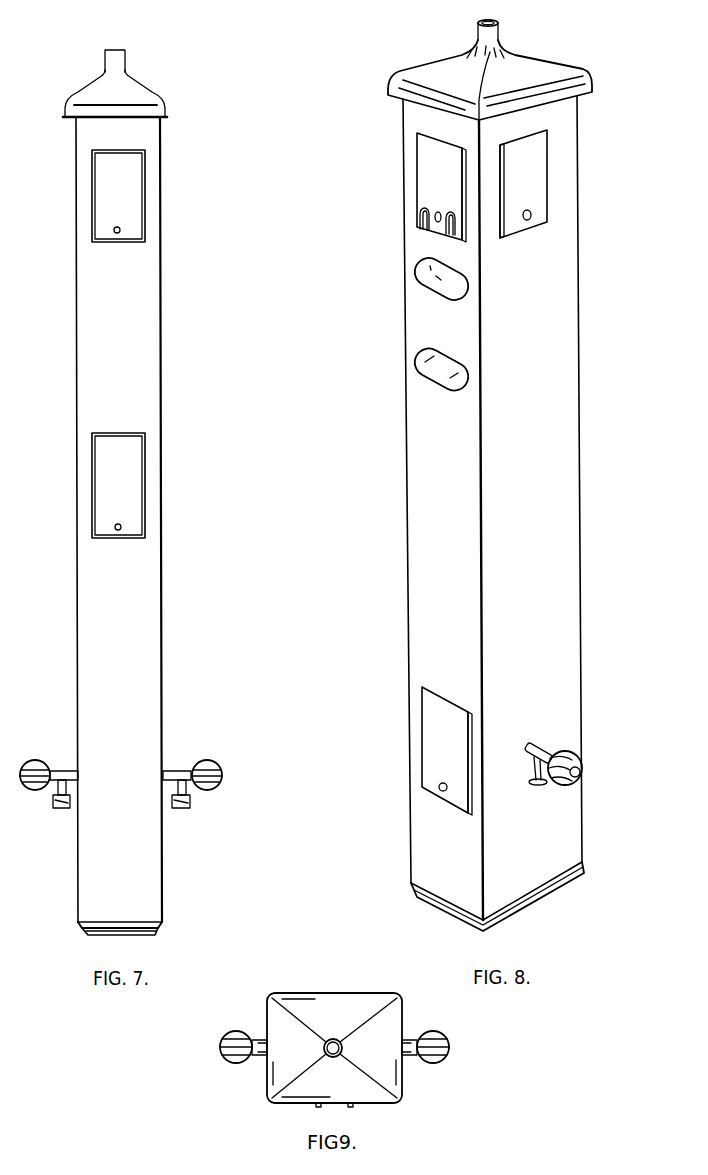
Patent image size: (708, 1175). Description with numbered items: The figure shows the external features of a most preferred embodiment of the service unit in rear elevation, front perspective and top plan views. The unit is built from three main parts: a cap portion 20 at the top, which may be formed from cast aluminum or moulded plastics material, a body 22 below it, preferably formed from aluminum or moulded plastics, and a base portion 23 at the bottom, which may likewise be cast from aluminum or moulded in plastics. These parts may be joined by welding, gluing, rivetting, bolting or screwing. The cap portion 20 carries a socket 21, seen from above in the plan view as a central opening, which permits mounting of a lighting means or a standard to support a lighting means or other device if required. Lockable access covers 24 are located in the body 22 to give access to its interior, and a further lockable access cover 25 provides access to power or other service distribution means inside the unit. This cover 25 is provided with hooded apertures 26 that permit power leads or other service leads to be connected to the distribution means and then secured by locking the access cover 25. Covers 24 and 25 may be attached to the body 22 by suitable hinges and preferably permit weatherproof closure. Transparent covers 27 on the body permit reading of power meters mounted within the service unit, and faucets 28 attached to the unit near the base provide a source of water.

In FIG. 7, the cap portion 20 is at (135, 100).
In FIG. 8, the cap portion 20 is at (538, 55).
In FIG. 9, the cap portion 20 is at (318, 993).
In FIG. 7, the socket 21 is at (115, 62).
In FIG. 8, the socket 21 is at (478, 32).
In FIG. 9, the socket 21 is at (340, 1043).
In FIG. 7, the body 22 is at (76, 368).
In FIG. 8, the body 22 is at (407, 442).
In FIG. 7, the base portion 23 is at (92, 937).
In FIG. 8, the base portion 23 is at (550, 897).
In FIG. 7, the lockable access covers 24 is at (103, 208).
In FIG. 8, the lockable access covers 24 is at (543, 190).
In FIG. 8, the lockable access cover 25 is at (422, 185).
In FIG. 8, the hooded apertures 26 is at (417, 227).
In FIG. 9, the hooded apertures 26 is at (317, 1105).
In FIG. 8, the transparent covers 27 is at (415, 275).
In FIG. 7, the faucets 28 is at (25, 792).
In FIG. 8, the faucets 28 is at (583, 768).
In FIG. 9, the faucets 28 is at (220, 1048).